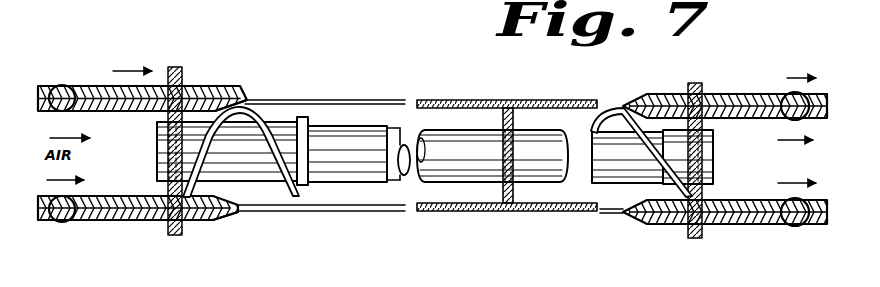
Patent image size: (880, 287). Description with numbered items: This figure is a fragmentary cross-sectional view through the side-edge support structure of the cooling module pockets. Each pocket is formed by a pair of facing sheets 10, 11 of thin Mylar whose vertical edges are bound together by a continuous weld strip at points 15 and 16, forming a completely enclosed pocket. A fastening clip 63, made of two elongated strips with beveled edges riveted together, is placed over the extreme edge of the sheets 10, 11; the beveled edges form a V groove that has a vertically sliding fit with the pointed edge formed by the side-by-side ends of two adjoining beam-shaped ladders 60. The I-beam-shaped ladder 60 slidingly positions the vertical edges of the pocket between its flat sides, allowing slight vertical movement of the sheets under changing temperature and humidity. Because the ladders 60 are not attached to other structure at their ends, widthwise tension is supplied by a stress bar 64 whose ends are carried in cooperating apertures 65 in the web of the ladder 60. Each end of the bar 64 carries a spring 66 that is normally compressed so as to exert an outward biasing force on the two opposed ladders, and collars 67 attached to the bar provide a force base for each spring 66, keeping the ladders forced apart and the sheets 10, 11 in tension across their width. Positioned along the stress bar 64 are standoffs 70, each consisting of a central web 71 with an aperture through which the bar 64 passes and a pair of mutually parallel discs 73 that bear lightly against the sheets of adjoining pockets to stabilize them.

The facing sheet 10 is at (50, 88).
The facing sheet 11 is at (350, 103).
The weld point 15 is at (247, 97).
The weld point 16 is at (618, 104).
The I-beam-shaped ladder 60 is at (152, 106).
The fastening clip 63 is at (90, 197).
The stress bar 64 is at (450, 135).
The aperture 65 is at (166, 140).
The spring 66 is at (266, 118).
The collar 67 is at (370, 122).
The standoff 70 is at (492, 189).
The central web 71 is at (478, 213).
The disc 73 is at (553, 101).